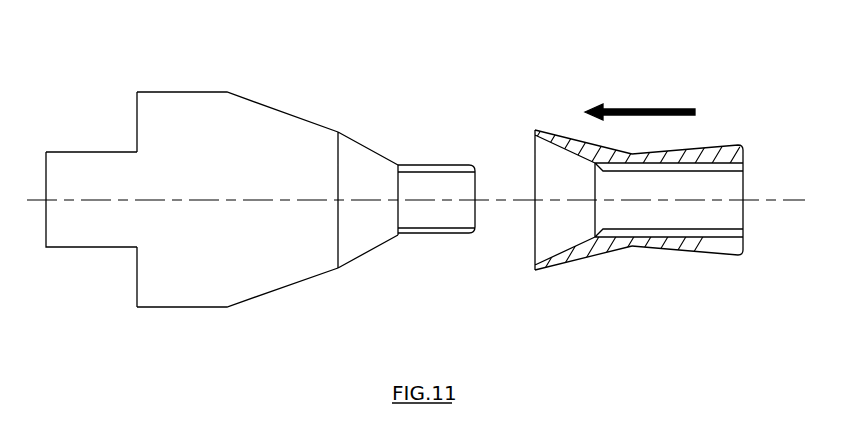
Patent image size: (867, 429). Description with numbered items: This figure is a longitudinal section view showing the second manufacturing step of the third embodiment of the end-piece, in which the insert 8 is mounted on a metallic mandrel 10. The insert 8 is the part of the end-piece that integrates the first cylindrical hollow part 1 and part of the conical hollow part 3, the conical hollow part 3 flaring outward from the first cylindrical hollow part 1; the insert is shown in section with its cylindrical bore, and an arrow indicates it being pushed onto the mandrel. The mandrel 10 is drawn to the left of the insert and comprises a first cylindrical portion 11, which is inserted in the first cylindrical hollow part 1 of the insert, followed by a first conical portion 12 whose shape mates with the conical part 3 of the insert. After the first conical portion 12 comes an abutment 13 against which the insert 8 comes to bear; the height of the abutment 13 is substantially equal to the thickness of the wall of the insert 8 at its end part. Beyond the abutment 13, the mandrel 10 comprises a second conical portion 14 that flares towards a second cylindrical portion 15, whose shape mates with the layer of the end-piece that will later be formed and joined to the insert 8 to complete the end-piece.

The first cylindrical hollow part 1 is at (687, 252).
The conical hollow part 3 is at (570, 261).
The insert 8 is at (690, 140).
The mandrel 10 is at (307, 99).
The first cylindrical portion 11 is at (437, 234).
The first conical portion 12 is at (360, 257).
The abutment 13 is at (340, 133).
The second conical portion 14 is at (275, 295).
The second cylindrical portion 15 is at (188, 92).